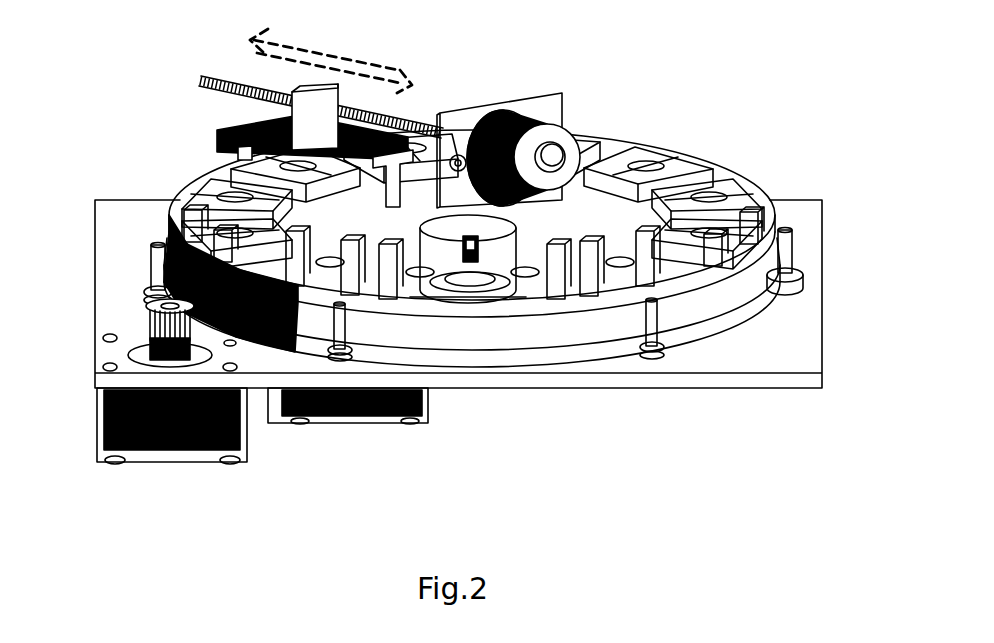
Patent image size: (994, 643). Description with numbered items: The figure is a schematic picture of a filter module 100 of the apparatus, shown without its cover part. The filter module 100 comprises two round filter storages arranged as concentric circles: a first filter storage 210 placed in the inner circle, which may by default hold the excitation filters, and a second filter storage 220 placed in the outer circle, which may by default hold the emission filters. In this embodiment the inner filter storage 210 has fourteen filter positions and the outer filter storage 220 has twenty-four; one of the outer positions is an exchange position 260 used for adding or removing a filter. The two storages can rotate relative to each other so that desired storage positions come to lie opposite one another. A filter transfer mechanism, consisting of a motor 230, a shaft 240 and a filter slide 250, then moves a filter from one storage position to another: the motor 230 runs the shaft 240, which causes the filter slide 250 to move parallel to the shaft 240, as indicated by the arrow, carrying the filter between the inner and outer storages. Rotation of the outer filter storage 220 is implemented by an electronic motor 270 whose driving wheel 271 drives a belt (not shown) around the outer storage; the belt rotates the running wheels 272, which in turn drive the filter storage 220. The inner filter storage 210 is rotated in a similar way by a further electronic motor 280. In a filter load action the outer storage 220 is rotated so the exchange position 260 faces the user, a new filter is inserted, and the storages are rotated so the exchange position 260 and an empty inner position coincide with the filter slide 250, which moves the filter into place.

The filter module 100 is at (813, 69).
The first filter storage 210 is at (590, 168).
The second filter storage 220 is at (178, 202).
The motor 230 is at (512, 118).
The shaft 240 is at (412, 127).
The filter slide 250 is at (216, 126).
The exchange position 260 is at (480, 300).
The motor 270 is at (152, 462).
The driving wheel 271 is at (152, 340).
The running wheels 272 is at (673, 345).
The electronic motor 280 is at (346, 424).